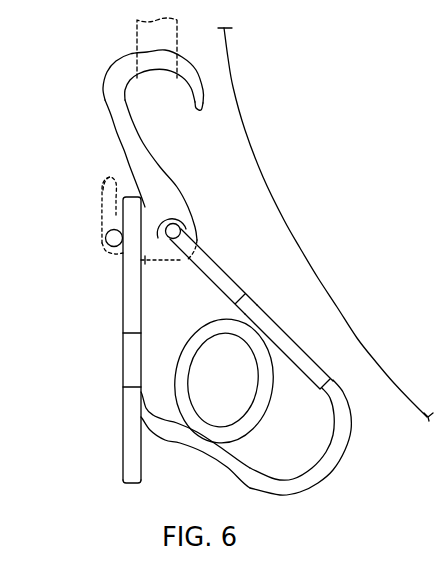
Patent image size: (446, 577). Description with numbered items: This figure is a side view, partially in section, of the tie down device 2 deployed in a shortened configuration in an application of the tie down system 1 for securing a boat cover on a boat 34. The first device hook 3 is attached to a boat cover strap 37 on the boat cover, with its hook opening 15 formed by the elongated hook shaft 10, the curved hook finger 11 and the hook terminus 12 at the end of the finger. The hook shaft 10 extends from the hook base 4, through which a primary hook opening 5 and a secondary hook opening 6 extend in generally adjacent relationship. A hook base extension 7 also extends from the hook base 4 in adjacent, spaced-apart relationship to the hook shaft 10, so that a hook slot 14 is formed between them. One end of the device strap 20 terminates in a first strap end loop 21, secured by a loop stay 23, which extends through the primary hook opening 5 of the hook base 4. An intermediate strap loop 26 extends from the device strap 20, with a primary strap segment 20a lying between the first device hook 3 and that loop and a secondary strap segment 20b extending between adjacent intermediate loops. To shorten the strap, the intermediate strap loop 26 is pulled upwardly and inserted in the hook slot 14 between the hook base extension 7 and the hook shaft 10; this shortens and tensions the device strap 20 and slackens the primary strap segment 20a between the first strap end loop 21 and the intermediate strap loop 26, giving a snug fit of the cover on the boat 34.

The tie down system 1 is at (55, 125).
The tie down device 2 is at (100, 300).
The first device hook 3 is at (192, 192).
The hook base 4 is at (150, 260).
The primary hook opening 5 is at (182, 219).
The secondary hook opening 6 is at (106, 238).
The hook base extension 7 is at (103, 193).
The hook shaft 10 is at (119, 145).
The hook finger 11 is at (117, 70).
The hook terminus 12 is at (201, 113).
The hook slot 14 is at (112, 167).
The hook opening 15 is at (168, 122).
The device strap 20 is at (238, 485).
The primary strap segment 20a is at (342, 463).
The secondary strap segment 20b is at (127, 453).
The first strap end loop 21 is at (228, 268).
The loop stay 23 is at (273, 316).
The intermediate strap loop 26 is at (130, 318).
The boat 34 is at (390, 387).
The boat cover strap 37 is at (138, 33).